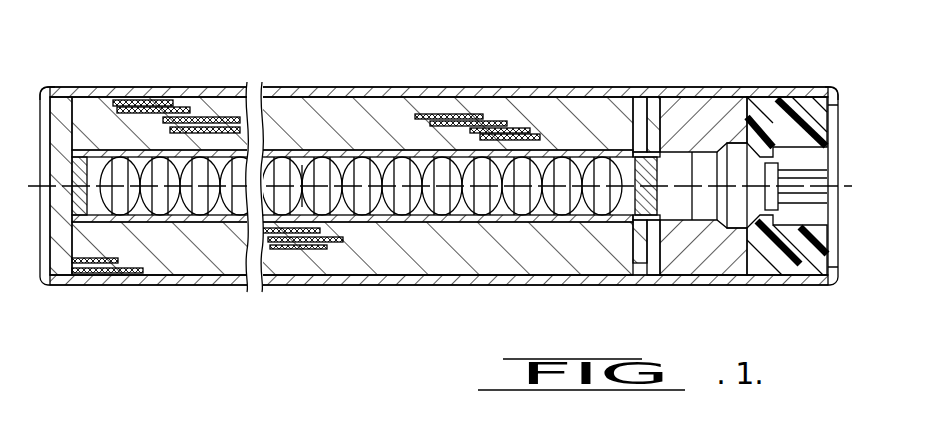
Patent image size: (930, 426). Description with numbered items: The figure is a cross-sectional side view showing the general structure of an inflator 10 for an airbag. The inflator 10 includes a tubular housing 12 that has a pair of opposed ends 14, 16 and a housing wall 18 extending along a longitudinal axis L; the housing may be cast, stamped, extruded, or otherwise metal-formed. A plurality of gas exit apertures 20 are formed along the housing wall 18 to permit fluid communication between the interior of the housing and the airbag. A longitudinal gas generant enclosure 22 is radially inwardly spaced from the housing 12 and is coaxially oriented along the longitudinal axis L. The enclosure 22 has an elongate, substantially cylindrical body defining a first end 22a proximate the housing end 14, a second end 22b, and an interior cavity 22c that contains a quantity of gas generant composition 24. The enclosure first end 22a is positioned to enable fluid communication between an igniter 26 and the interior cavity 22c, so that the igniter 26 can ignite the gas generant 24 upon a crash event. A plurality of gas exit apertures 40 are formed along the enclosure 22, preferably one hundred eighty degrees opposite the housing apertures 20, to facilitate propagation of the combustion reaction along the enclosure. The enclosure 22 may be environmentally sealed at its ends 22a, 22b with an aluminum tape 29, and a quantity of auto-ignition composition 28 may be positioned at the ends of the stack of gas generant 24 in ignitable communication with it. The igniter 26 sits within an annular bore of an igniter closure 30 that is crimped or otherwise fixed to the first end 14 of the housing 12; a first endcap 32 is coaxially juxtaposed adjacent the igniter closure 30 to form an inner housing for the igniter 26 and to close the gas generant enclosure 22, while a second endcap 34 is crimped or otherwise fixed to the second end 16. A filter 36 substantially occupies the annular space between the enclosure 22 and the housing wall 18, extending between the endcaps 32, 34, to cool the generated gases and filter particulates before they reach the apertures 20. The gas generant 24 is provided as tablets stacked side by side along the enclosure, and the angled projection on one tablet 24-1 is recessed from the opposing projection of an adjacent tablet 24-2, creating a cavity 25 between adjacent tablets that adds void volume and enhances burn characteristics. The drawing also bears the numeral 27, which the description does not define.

The inflator 10 is at (533, 57).
The tubular housing 12 is at (128, 86).
The first end of housing 14 is at (806, 86).
The second end of housing 16 is at (78, 86).
The housing wall 18 is at (298, 284).
The gas exit apertures 20 is at (423, 284).
The gas generant enclosure 22 is at (500, 222).
The first end of enclosure 22a is at (645, 225).
The second end of enclosure 22b is at (147, 223).
The interior cavity 22c is at (622, 205).
The gas generant composition 24 is at (443, 170).
The gas generant tablet 24-1 is at (290, 160).
The adjacent gas generant tablet 24-2 is at (318, 165).
The cavity 25 is at (503, 162).
The igniter 26 is at (737, 162).
The inner sleeve 27 is at (460, 215).
The auto-ignition composition 28 is at (643, 170).
The aluminum tape 29 is at (663, 160).
The igniter closure 30 is at (805, 265).
The first endcap 32 is at (710, 257).
The second endcap 34 is at (62, 274).
The filter 36 is at (572, 250).
The gas exit apertures of enclosure 40 is at (208, 120).
The longitudinal axis L is at (843, 186).